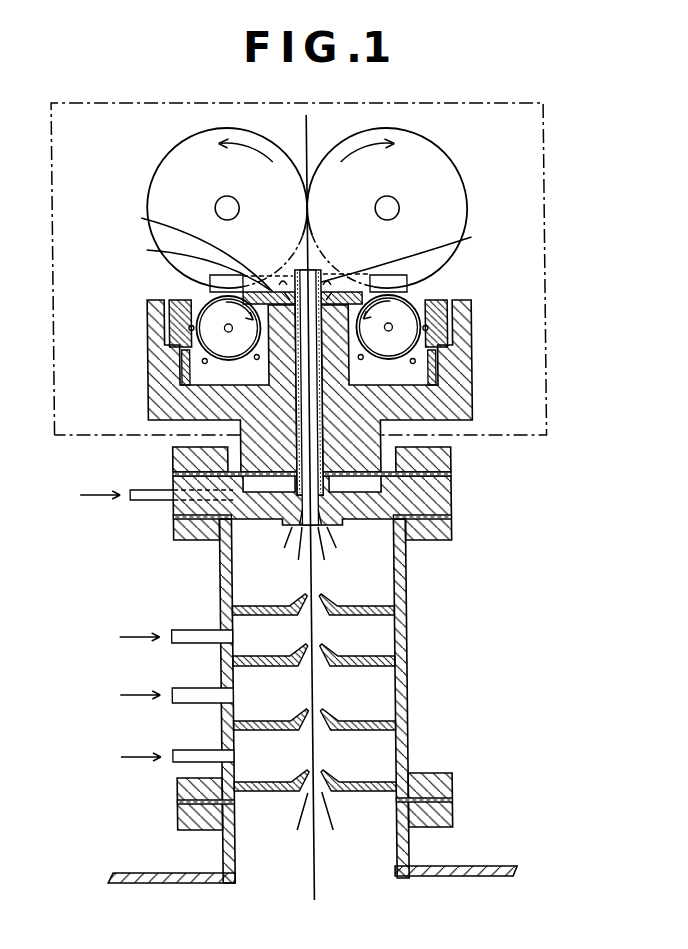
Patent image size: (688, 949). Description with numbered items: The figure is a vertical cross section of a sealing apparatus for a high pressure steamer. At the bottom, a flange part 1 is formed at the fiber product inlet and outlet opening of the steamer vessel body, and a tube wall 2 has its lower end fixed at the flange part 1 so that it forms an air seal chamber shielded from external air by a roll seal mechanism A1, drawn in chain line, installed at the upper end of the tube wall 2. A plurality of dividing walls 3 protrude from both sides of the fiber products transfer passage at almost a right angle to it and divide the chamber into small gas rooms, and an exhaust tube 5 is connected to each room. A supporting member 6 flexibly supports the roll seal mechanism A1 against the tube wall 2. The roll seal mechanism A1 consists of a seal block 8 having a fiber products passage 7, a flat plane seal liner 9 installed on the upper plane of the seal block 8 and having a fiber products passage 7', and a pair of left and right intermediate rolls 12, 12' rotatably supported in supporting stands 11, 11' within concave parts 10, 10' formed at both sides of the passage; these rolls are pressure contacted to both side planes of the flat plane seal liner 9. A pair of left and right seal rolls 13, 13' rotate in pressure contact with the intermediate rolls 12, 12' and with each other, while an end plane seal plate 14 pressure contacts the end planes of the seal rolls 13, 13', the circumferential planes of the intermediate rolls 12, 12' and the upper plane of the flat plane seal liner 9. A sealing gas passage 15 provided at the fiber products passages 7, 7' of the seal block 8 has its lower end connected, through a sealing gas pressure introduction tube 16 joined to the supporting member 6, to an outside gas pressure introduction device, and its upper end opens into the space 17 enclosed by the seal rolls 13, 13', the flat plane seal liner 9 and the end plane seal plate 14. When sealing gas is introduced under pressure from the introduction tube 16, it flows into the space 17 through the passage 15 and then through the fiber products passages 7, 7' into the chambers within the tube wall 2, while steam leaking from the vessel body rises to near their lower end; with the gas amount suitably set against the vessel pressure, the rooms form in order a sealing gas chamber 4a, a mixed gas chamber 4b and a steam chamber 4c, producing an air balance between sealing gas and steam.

The roll seal mechanism A1 is at (456, 103).
The flange part 1 is at (444, 812).
The tube wall 2 is at (400, 722).
The dividing walls 3 is at (263, 605).
The sealing gas chamber 4a is at (368, 633).
The mixed gas chamber 4b is at (370, 687).
The steam chamber 4c is at (368, 756).
The exhaust tube 5 is at (190, 630).
The supporting member 6 is at (447, 489).
The fiber products passage 7 is at (308, 416).
The fiber products passage 7' is at (196, 246).
The seal block 8 is at (469, 403).
The flat plane seal liner 9 is at (246, 271).
The concave part 10 is at (148, 367).
The concave part 10' is at (476, 366).
The supporting stand 11 is at (148, 323).
The supporting stand 11' is at (474, 323).
The intermediate roll 12 is at (207, 315).
The intermediate roll 12' is at (410, 313).
The seal roll 13 is at (208, 208).
The seal roll 13' is at (415, 208).
The end plane seal plate 14 is at (309, 166).
The sealing gas passage 15 is at (336, 521).
The sealing gas pressure introduction tube 16 is at (138, 489).
The space 17 is at (410, 255).